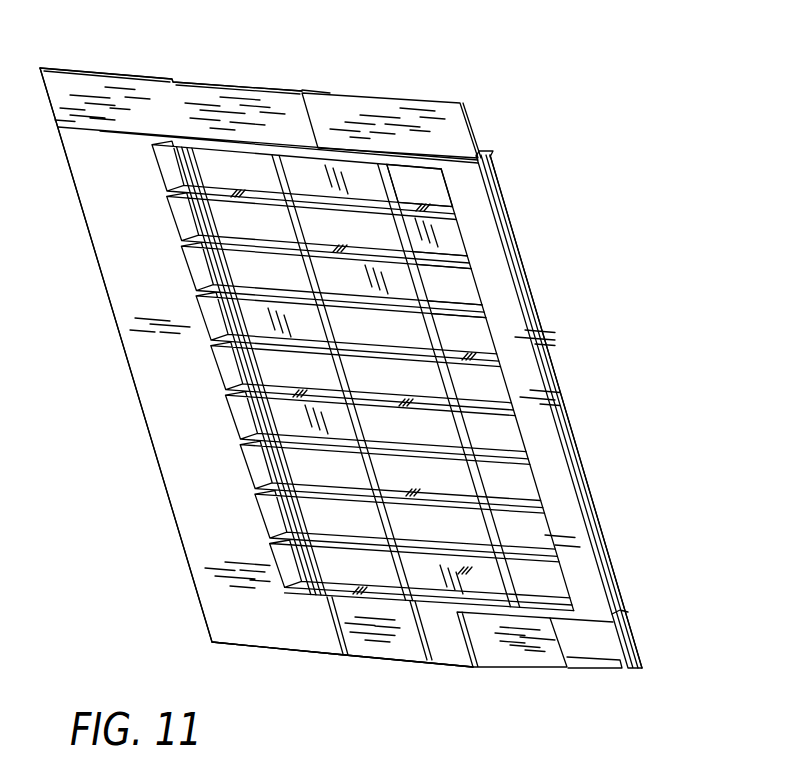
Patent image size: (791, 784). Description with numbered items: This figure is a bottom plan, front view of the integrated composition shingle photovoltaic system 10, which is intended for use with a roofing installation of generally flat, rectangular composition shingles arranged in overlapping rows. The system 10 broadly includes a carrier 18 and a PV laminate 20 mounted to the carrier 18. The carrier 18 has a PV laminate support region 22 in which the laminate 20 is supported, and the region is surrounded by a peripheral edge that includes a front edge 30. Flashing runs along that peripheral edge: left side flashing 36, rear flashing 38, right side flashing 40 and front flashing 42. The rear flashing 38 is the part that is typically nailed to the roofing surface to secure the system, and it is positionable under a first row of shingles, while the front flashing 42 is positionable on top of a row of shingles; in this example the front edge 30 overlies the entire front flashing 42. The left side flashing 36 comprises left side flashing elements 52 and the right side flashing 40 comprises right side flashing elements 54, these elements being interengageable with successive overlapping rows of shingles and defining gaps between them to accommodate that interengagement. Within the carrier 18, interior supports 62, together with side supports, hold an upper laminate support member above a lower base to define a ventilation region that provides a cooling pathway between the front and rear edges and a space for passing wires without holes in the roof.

The integrated composition shingle photovoltaic (PV) system 10 is at (640, 93).
The carrier 18 is at (604, 369).
The PV laminate 20 is at (425, 192).
The PV laminate support region 22 is at (446, 254).
The front edge 30 is at (585, 436).
The left side flashing 36 is at (346, 88).
The rear flashing 38 is at (116, 388).
The right side flashing 40 is at (417, 666).
The front flashing 42 is at (568, 498).
The left side flashing elements 52 is at (378, 112).
The right side flashing elements 54 is at (503, 650).
The interior supports 62 is at (472, 310).